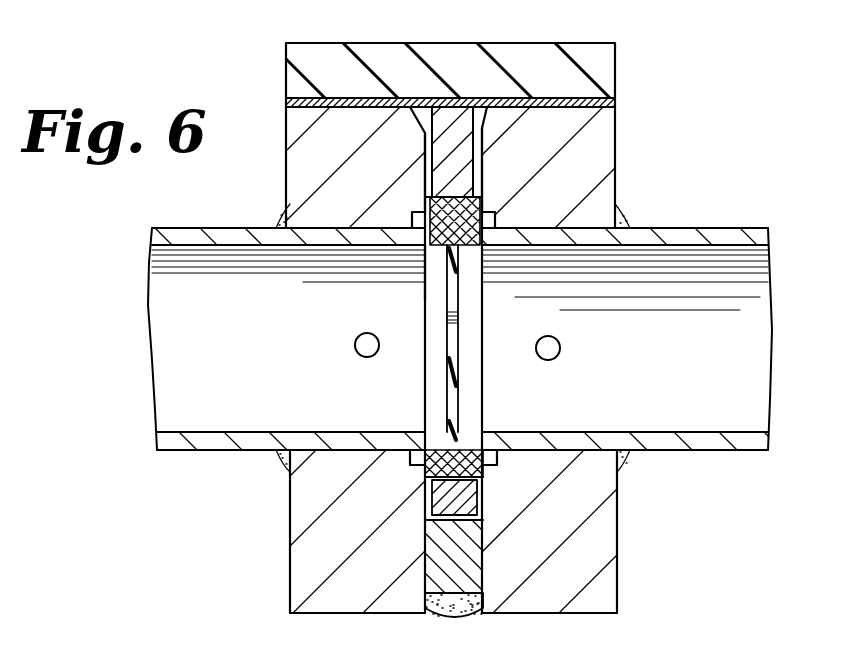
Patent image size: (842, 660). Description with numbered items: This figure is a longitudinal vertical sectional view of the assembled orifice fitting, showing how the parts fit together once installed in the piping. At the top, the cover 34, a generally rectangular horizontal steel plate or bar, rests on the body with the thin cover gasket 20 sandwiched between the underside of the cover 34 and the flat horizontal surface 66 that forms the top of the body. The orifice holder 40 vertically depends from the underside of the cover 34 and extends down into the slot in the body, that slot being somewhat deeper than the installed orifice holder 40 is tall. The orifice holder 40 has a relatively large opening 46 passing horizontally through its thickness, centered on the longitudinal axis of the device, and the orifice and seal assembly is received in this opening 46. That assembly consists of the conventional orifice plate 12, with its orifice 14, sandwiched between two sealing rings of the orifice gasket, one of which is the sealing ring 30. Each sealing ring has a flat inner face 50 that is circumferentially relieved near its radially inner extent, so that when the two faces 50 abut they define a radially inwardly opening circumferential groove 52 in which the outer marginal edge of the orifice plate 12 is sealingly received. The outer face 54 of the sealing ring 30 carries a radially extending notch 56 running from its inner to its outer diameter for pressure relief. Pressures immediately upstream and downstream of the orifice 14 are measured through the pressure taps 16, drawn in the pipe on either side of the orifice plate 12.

The orifice plate 12 is at (462, 375).
The orifice 14 is at (440, 356).
The pressure taps 16 is at (357, 347).
The cover gasket 20 is at (614, 103).
The sealing ring 30 is at (434, 325).
The cover 34 is at (614, 72).
The orifice holder 40 is at (464, 122).
The opening 46 is at (483, 210).
The flat inner face 50 is at (494, 226).
The circumferential groove 52 is at (464, 446).
The outer face 54 is at (417, 447).
The notch 56 is at (425, 268).
The flat horizontal surface 66 is at (555, 112).